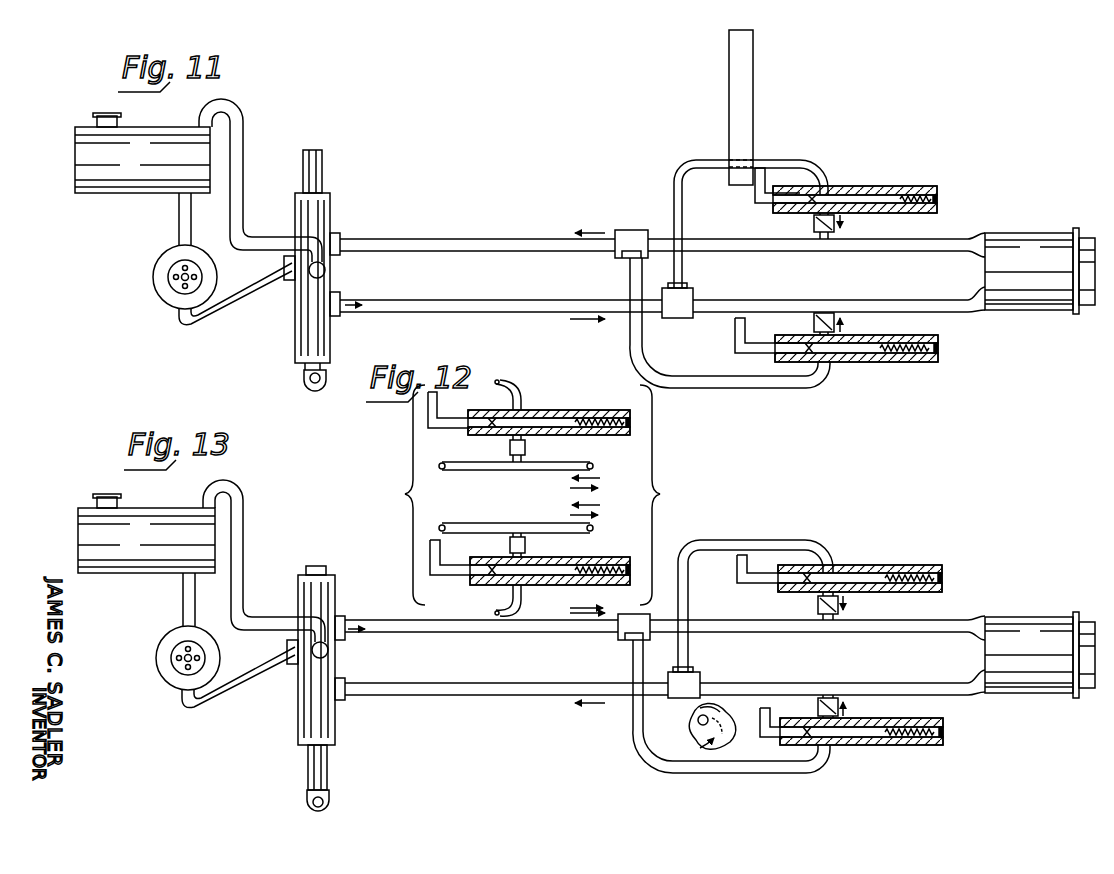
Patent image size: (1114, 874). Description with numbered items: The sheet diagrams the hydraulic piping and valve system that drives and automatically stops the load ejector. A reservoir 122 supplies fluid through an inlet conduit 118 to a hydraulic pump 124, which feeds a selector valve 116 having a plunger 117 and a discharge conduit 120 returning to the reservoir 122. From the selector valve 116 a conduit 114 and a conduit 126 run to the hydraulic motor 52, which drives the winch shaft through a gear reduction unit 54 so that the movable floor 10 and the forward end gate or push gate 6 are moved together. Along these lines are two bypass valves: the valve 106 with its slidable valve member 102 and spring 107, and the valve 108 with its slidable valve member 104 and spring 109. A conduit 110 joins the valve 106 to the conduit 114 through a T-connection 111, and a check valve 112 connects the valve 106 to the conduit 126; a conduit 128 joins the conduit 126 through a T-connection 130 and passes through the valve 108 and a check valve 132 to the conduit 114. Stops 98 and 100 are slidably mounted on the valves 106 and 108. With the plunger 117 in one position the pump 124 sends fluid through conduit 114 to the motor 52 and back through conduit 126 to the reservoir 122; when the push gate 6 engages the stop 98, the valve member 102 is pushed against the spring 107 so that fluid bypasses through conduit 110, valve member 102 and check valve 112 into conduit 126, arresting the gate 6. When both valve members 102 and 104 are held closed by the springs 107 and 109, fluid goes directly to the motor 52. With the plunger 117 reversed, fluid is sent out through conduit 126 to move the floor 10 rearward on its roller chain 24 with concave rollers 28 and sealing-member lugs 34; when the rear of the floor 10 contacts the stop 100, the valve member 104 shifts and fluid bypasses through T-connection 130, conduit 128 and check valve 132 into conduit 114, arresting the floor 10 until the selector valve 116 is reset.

In FIG. 11, the forward end gate or push gate 6 is at (745, 102).
In FIG. 13, the movable floor 10 is at (726, 730).
In FIG. 13, the roller chain 24 is at (692, 736).
In FIG. 13, the concave rollers 28 is at (692, 712).
In FIG. 13, the lugs 34 is at (699, 750).
In FIG. 11, the hydraulic motor 52 is at (1012, 306).
In FIG. 13, the hydraulic motor 52 is at (1010, 618).
In FIG. 11, the gear reduction unit 54 is at (1077, 313).
In FIG. 13, the gear reduction unit 54 is at (1083, 618).
In FIG. 11, the stop 98 is at (755, 196).
In FIG. 12, the stop 98 is at (437, 397).
In FIG. 13, the stop 98 is at (737, 581).
In FIG. 11, the stop 100 is at (735, 330).
In FIG. 12, the stop 100 is at (438, 560).
In FIG. 13, the stop 100 is at (763, 705).
In FIG. 11, the slidable valve member 102 is at (845, 196).
In FIG. 12, the slidable valve member 102 is at (540, 418).
In FIG. 13, the slidable valve member 102 is at (855, 573).
In FIG. 11, the slidable valve member 104 is at (838, 356).
In FIG. 12, the slidable valve member 104 is at (550, 580).
In FIG. 13, the slidable valve member 104 is at (885, 739).
In FIG. 11, the valve 106 is at (905, 186).
In FIG. 12, the valve 106 is at (470, 437).
In FIG. 13, the valve 106 is at (905, 565).
In FIG. 11, the spring 107 is at (910, 211).
In FIG. 12, the spring 107 is at (612, 412).
In FIG. 13, the spring 107 is at (912, 592).
In FIG. 11, the valve 108 is at (905, 361).
In FIG. 12, the valve 108 is at (478, 586).
In FIG. 13, the valve 108 is at (838, 746).
In FIG. 11, the spring 109 is at (918, 336).
In FIG. 12, the spring 109 is at (612, 557).
In FIG. 13, the spring 109 is at (935, 718).
In FIG. 11, the conduit 110 is at (818, 178).
In FIG. 12, the conduit 110 is at (503, 395).
In FIG. 13, the conduit 110 is at (815, 538).
In FIG. 11, the T-connection 111 is at (698, 298).
In FIG. 13, the T-connection 111 is at (694, 682).
In FIG. 11, the check valve 112 is at (814, 224).
In FIG. 12, the check valve 112 is at (517, 448).
In FIG. 13, the check valve 112 is at (818, 606).
In FIG. 11, the conduit 114 is at (520, 300).
In FIG. 12, the conduit 114 is at (543, 526).
In FIG. 13, the conduit 114 is at (460, 695).
In FIG. 11, the selector valve 116 is at (296, 325).
In FIG. 13, the selector valve 116 is at (337, 598).
In FIG. 11, the plunger 117 is at (323, 168).
In FIG. 13, the plunger 117 is at (327, 765).
In FIG. 11, the inlet conduit 118 is at (250, 300).
In FIG. 13, the inlet conduit 118 is at (255, 681).
In FIG. 11, the discharge conduit 120 is at (239, 216).
In FIG. 13, the discharge conduit 120 is at (243, 557).
In FIG. 11, the reservoir 122 is at (118, 196).
In FIG. 13, the reservoir 122 is at (133, 575).
In FIG. 11, the hydraulic pump 124 is at (160, 262).
In FIG. 13, the hydraulic pump 124 is at (176, 677).
In FIG. 11, the conduit 126 is at (446, 251).
In FIG. 12, the conduit 126 is at (472, 468).
In FIG. 13, the conduit 126 is at (415, 633).
In FIG. 11, the conduit 128 is at (772, 388).
In FIG. 12, the conduit 128 is at (520, 566).
In FIG. 13, the conduit 128 is at (635, 760).
In FIG. 11, the T-connection 130 is at (636, 238).
In FIG. 13, the T-connection 130 is at (623, 636).
In FIG. 11, the check valve 132 is at (814, 322).
In FIG. 12, the check valve 132 is at (517, 545).
In FIG. 13, the check valve 132 is at (818, 708).